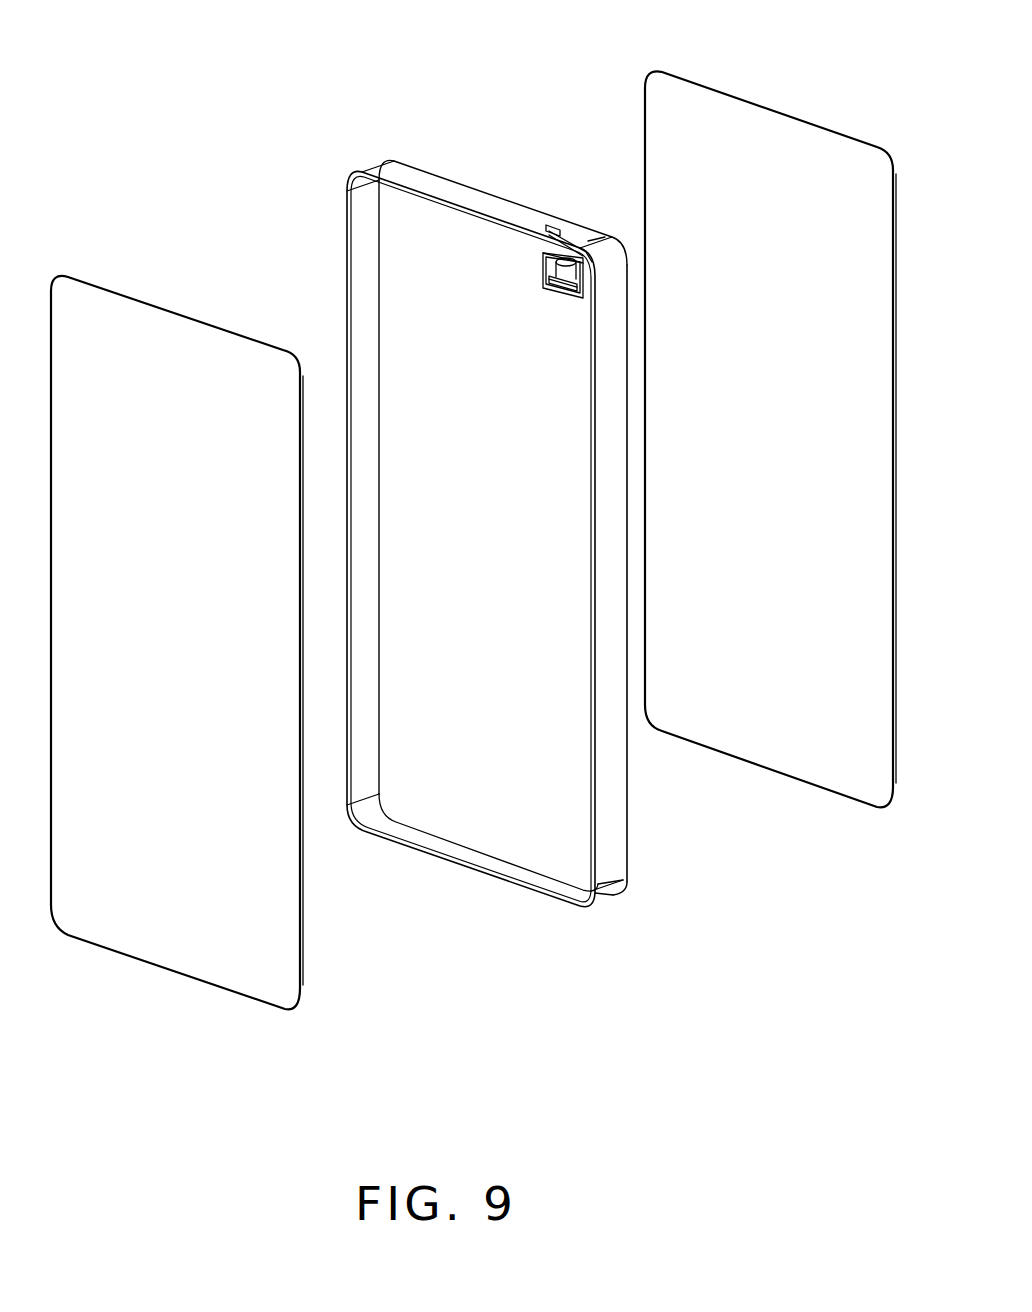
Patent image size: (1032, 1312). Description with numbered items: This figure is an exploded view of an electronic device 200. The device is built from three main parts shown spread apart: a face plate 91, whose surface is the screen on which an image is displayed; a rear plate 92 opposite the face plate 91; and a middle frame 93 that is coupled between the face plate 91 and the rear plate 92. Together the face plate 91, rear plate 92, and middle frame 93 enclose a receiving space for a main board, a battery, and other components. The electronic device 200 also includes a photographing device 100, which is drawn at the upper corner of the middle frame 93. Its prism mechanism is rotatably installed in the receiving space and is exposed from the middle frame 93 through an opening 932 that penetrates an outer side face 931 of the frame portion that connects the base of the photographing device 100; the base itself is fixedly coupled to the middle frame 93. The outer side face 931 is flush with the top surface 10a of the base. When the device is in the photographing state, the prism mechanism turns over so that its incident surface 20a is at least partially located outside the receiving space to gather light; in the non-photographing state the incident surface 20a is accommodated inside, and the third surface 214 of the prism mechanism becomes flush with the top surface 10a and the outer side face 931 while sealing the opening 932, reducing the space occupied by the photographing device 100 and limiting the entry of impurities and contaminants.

The electronic device 200 is at (394, 29).
The face plate 91 is at (170, 328).
The rear plate 92 is at (727, 105).
The middle frame 93 is at (528, 507).
The outer side face 931 is at (417, 172).
The opening 932 is at (597, 242).
The top surface 10a is at (557, 231).
The photographing device 100 is at (510, 297).
The third surface 214 is at (572, 238).
The incident surface 20a is at (543, 254).